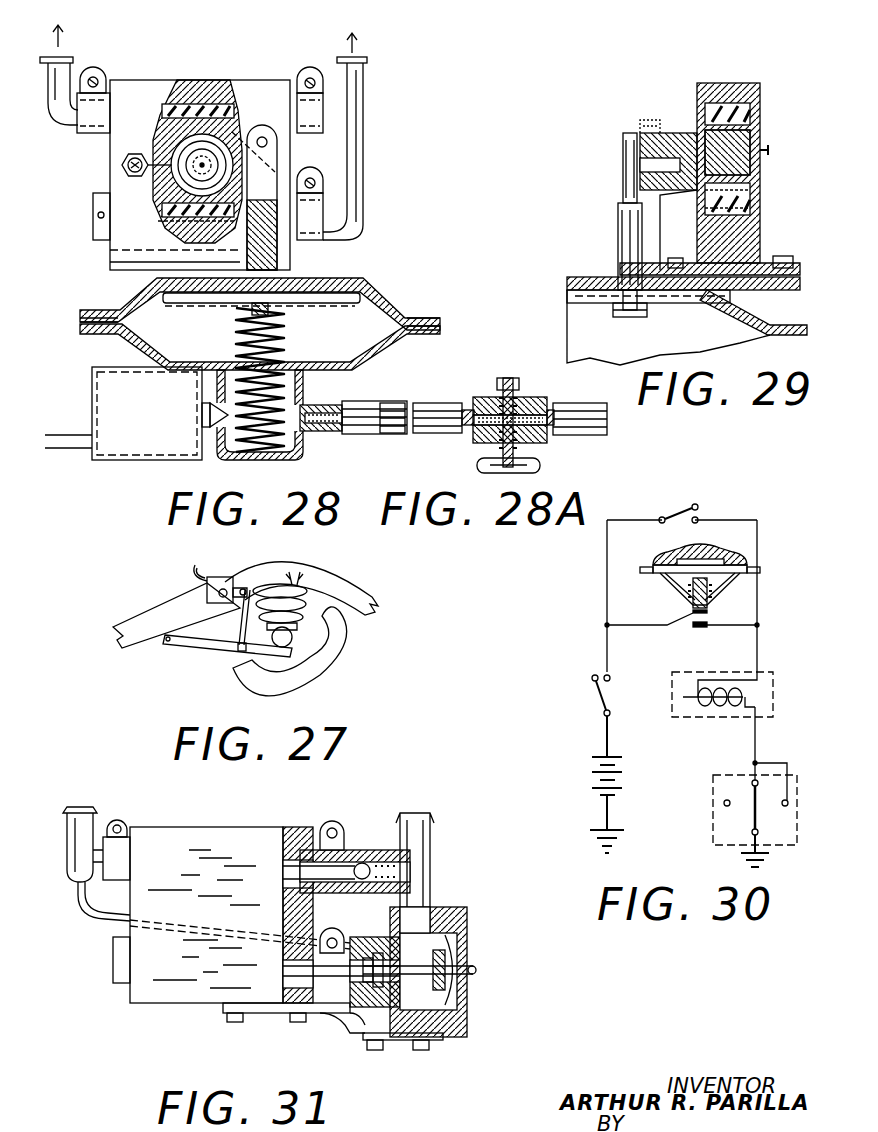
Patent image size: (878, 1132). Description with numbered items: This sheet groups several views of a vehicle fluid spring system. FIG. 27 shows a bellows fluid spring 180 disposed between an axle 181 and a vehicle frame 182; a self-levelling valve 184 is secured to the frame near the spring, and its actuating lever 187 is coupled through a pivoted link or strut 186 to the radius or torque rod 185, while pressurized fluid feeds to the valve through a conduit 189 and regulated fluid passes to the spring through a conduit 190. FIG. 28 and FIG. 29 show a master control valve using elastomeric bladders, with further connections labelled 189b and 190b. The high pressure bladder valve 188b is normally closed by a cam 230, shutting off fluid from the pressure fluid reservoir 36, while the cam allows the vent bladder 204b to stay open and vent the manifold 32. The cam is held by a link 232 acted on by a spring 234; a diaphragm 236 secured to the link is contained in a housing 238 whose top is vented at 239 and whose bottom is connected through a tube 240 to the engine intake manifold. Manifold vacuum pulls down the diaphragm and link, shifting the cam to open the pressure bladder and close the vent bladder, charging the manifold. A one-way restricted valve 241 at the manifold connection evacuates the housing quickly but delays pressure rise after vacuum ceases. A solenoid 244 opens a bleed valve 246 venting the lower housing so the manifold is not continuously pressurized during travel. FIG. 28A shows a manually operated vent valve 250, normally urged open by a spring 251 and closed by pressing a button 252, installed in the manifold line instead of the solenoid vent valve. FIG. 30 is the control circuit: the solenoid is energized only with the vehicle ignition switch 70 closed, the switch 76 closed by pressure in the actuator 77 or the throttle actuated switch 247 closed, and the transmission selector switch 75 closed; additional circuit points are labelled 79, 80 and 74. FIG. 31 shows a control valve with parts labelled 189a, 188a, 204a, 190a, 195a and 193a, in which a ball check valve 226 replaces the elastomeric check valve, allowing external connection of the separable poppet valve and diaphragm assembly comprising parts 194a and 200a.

In FIG. 28, the pressure fluid reservoir 36 is at (75, 32).
In FIG. 28, the manifold 32 is at (368, 38).
In FIG. 28, the pipe 189b is at (73, 67).
In FIG. 28, the pipe 190b is at (359, 78).
In FIG. 28, the high pressure bladder valve 188b is at (190, 96).
In FIG. 29, the high pressure bladder valve 188b is at (757, 117).
In FIG. 28, the vent bladder 204b is at (170, 232).
In FIG. 29, the vent bladder 204b is at (752, 222).
In FIG. 28, the cam 230 is at (122, 163).
In FIG. 29, the cam 230 is at (738, 150).
In FIG. 28, the link 232 is at (283, 243).
In FIG. 29, the link 232 is at (620, 222).
In FIG. 28, the vent 239 is at (330, 281).
In FIG. 28, the diaphragm 236 is at (377, 313).
In FIG. 29, the diaphragm 236 is at (750, 318).
In FIG. 28, the housing 238 is at (393, 343).
In FIG. 29, the housing 238 is at (777, 325).
In FIG. 28, the spring 234 is at (287, 348).
In FIG. 28, the solenoid 244 is at (123, 413).
In FIG. 30, the solenoid 244 is at (744, 675).
In FIG. 28, the bleed valve 246 is at (210, 435).
In FIG. 28, the one-way restricted valve 241 is at (317, 433).
In FIG. 28, the tube 240 is at (363, 388).
In FIG. 28A, the tube 240 is at (586, 395).
In FIG. 28A, the manually operated vent valve 250 is at (473, 442).
In FIG. 28A, the spring 251 is at (520, 447).
In FIG. 28A, the button 252 is at (513, 473).
In FIG. 27, the vehicle frame 182 is at (335, 578).
In FIG. 27, the actuating lever 187 is at (232, 612).
In FIG. 27, the self-levelling valve 184 is at (215, 580).
In FIG. 27, the conduit 189 is at (200, 572).
In FIG. 27, the conduit 190 is at (274, 569).
In FIG. 27, the bellows fluid spring 180 is at (315, 612).
In FIG. 27, the axle 181 is at (293, 637).
In FIG. 27, the pivoted link or strut 186 is at (242, 628).
In FIG. 27, the radius or torque rod 185 is at (217, 653).
In FIG. 30, the throttle actuated switch 247 is at (677, 505).
In FIG. 30, the actuator 77 is at (680, 583).
In FIG. 30, the switch 76 is at (708, 613).
In FIG. 30, the vehicle ignition switch 70 is at (610, 680).
In FIG. 30, the relay contact 79 is at (760, 776).
In FIG. 30, the relay contact 80 is at (790, 803).
In FIG. 30, the relay contact 74 is at (723, 803).
In FIG. 30, the transmission selector switch 75 is at (750, 818).
In FIG. 31, the pipe 189a is at (95, 821).
In FIG. 31, the valve body 188a is at (283, 913).
In FIG. 31, the housing portion 204a is at (283, 995).
In FIG. 31, the ball check valve 226 is at (366, 860).
In FIG. 31, the pipe 190a is at (432, 835).
In FIG. 31, the cylinder housing 195a is at (467, 1000).
In FIG. 31, the diaphragm 194a is at (440, 945).
In FIG. 31, the piston rod 193a is at (478, 970).
In FIG. 31, the poppet valve 200a is at (338, 1022).